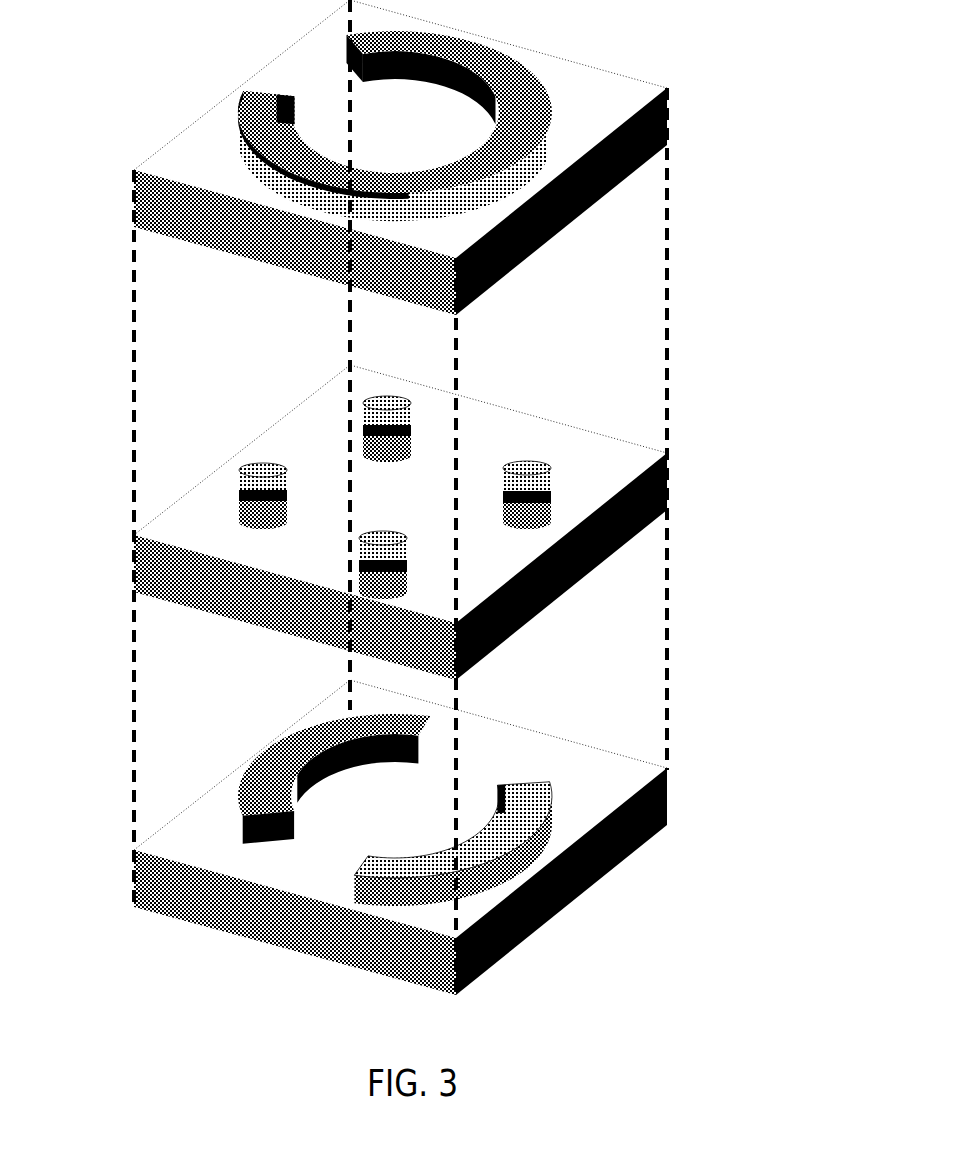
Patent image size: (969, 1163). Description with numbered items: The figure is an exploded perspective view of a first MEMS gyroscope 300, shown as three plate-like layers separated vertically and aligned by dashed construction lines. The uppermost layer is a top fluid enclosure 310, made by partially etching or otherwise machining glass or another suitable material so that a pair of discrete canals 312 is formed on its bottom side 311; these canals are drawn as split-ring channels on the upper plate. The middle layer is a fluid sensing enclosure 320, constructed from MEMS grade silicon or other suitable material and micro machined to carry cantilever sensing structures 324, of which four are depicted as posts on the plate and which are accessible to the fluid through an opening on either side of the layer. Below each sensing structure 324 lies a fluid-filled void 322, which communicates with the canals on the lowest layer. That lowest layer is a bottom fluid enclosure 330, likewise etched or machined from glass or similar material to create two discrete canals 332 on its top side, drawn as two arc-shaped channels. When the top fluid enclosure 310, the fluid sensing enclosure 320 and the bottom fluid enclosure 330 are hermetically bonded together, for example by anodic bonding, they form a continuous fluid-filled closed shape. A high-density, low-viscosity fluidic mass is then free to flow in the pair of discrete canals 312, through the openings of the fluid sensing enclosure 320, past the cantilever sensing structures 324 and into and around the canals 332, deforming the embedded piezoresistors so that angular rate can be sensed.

The first MEMS gyroscope 300 is at (147, 87).
The top fluid enclosure 310 is at (387, 158).
The bottom side 311 is at (597, 205).
The pair of discrete canals 312 is at (287, 153).
The fluid sensing enclosure 320 is at (408, 498).
The fluid-filled void 322 is at (268, 467).
The sensing structure 324 is at (242, 493).
The bottom fluid enclosure 330 is at (349, 837).
The discrete canals 332 is at (487, 838).